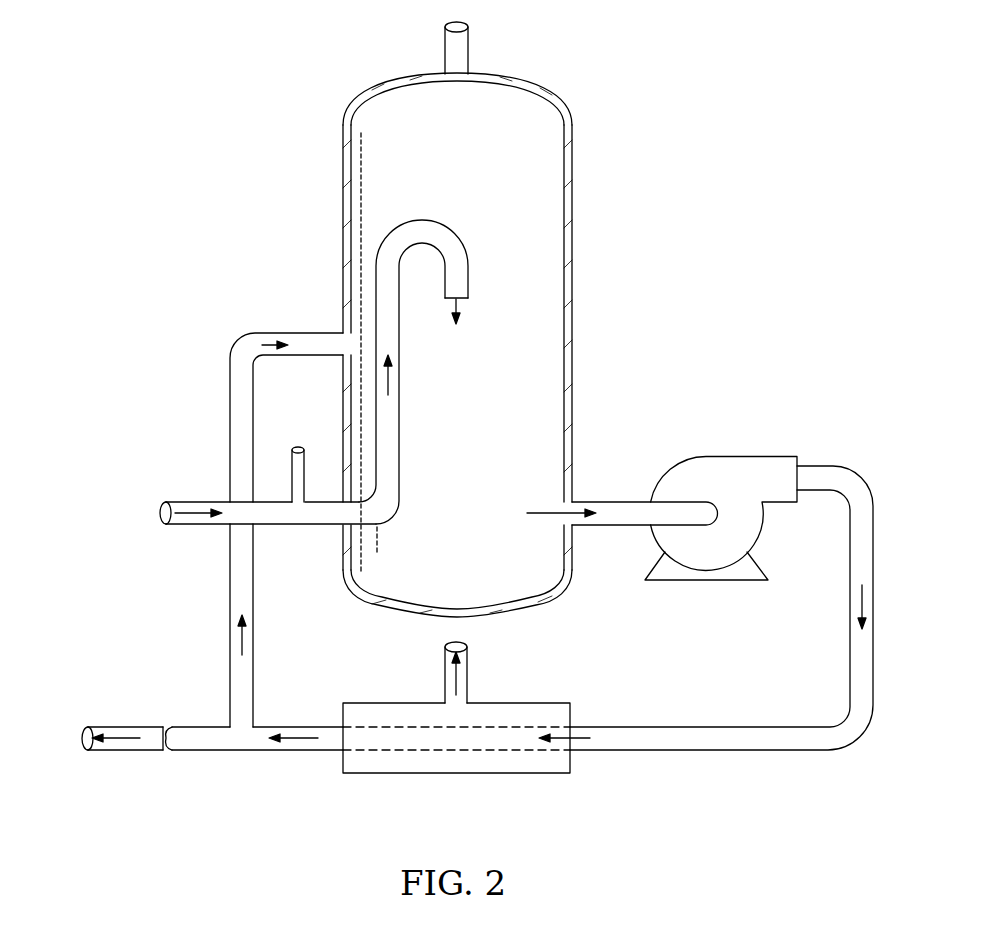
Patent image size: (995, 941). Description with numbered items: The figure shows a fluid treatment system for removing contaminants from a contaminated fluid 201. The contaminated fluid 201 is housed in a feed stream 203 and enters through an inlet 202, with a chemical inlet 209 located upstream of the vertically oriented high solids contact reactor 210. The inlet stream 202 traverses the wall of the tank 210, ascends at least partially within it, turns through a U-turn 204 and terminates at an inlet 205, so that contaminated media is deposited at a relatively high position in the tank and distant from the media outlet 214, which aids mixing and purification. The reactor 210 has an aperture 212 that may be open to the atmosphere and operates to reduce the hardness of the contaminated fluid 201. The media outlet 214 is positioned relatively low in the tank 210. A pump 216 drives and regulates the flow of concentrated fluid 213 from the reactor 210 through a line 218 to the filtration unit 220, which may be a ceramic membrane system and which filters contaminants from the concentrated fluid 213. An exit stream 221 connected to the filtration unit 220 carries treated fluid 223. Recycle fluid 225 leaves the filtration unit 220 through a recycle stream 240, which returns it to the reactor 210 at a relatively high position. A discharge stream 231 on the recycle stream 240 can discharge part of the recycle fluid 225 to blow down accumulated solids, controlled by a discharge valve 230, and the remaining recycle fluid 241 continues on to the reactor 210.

The contaminated fluid 201 is at (188, 503).
The inlet 202 is at (305, 527).
The feed stream 203 is at (183, 527).
The U-turn 204 is at (418, 220).
The inlet 205 is at (470, 288).
The chemical inlet 209 is at (292, 447).
The high solids contact reactor 210 is at (385, 81).
The aperture 212 is at (472, 50).
The concentrated fluid 213 is at (548, 518).
The media outlet 214 is at (603, 527).
The pump 216 is at (710, 583).
The pump discharge pipe 218 is at (695, 752).
The filtration unit 220 is at (455, 775).
The exit stream 221 is at (470, 692).
The treated fluid 223 is at (447, 682).
The recycle fluid 225 is at (298, 752).
The discharge valve 230 is at (168, 752).
The discharge stream 231 is at (122, 752).
The recycle stream 240 is at (226, 605).
The recycle fluid 241 is at (240, 388).